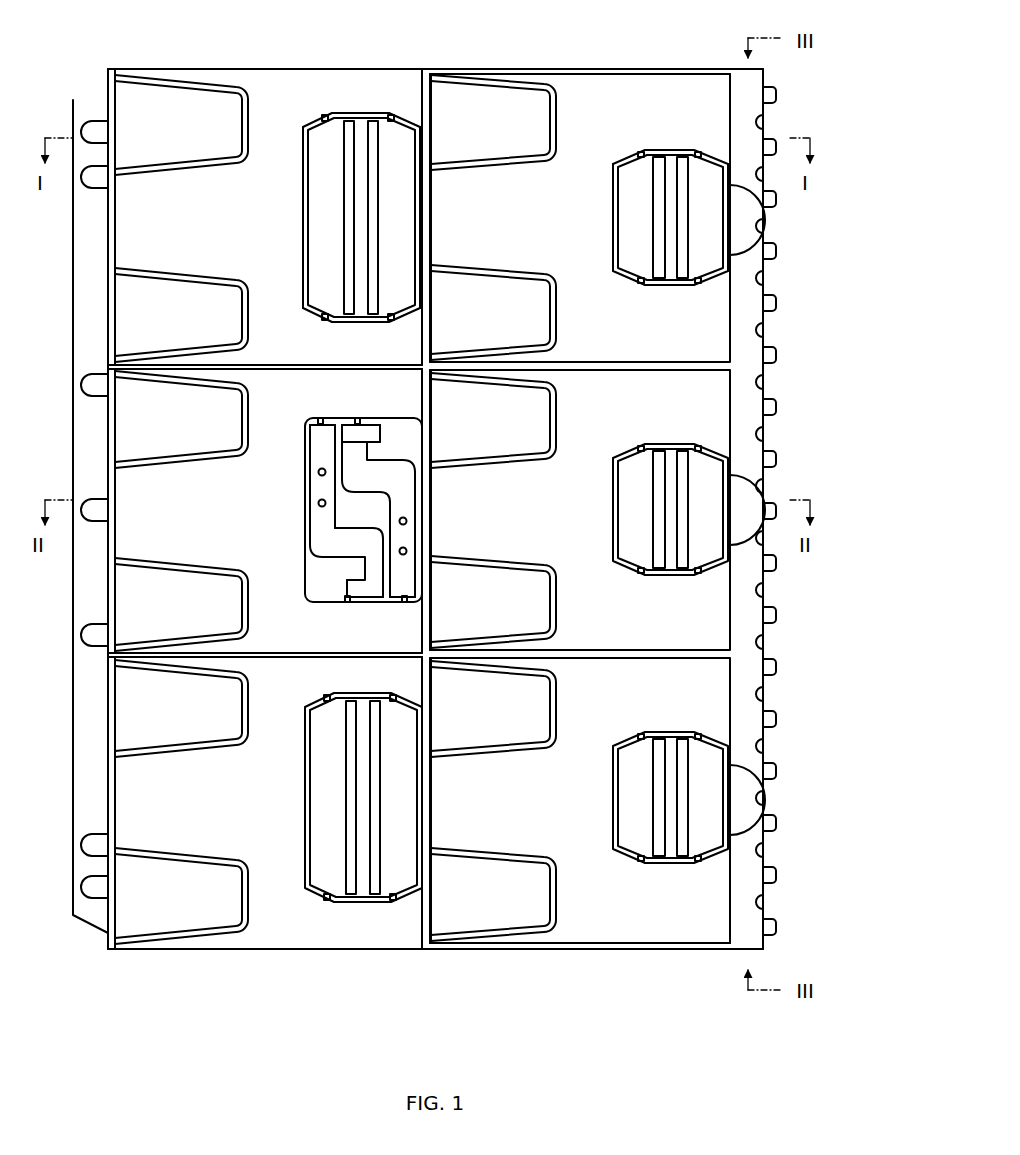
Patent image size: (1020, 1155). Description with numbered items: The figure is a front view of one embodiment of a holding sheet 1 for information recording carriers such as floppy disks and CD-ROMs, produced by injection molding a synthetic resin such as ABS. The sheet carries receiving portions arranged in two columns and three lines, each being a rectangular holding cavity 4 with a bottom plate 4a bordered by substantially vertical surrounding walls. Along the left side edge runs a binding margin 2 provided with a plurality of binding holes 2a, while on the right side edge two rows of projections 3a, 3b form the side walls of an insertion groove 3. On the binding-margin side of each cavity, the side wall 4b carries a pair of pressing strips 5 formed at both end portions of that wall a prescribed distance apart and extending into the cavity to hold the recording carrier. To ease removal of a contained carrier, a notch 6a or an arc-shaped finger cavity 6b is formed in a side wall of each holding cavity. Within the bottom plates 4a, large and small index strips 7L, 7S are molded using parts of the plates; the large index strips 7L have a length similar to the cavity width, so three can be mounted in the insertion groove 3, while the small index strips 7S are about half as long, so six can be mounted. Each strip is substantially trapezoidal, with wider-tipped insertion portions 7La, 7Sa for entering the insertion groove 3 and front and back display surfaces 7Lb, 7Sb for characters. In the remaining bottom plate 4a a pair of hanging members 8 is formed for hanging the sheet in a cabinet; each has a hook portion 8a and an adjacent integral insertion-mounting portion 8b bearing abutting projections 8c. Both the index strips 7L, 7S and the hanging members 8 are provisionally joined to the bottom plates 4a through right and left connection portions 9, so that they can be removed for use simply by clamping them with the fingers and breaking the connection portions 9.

The holding sheet 1 is at (498, 56).
The binding margin 2 is at (78, 305).
The binding holes 2a is at (95, 176).
The insertion groove 3 is at (770, 600).
The projections 3a is at (770, 275).
The projections 3b is at (775, 140).
The holding cavity 4 is at (210, 68).
The bottom plate 4a is at (270, 105).
The side wall 4b is at (115, 255).
The pressing strips 5 is at (172, 300).
The notch 6a is at (432, 212).
The finger cavity 6b is at (742, 238).
The large index strips 7L is at (302, 265).
The insertion portion 7La is at (373, 137).
The display surface 7Lb is at (318, 190).
The small index strips 7S is at (611, 254).
The insertion portion 7Sa is at (683, 160).
The display surface 7Sb is at (700, 230).
The hanging members 8 is at (389, 450).
The hook portion 8a is at (357, 432).
The insertion-mounting portion 8b is at (318, 452).
The abutting projections 8c is at (318, 502).
The connection portions 9 is at (392, 118).